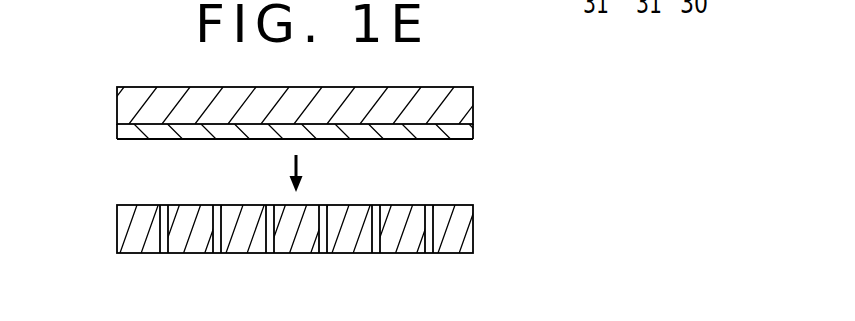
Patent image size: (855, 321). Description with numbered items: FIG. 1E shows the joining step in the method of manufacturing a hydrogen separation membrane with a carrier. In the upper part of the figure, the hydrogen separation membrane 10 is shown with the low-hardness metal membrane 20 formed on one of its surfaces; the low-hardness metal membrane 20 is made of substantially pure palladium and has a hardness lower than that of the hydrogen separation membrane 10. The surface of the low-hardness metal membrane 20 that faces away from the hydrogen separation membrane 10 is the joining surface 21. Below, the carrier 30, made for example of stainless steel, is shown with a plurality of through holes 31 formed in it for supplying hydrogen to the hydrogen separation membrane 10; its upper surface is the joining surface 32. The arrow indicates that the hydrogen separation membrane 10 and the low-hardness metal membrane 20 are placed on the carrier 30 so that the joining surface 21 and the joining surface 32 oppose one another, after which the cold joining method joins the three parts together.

The hydrogen separation membrane 10 is at (463, 105).
The low-hardness metal membrane 20 is at (463, 132).
The joining surface 21 is at (142, 140).
The carrier 30 is at (291, 228).
The through holes 31 is at (376, 253).
The joining surface 32 is at (447, 205).